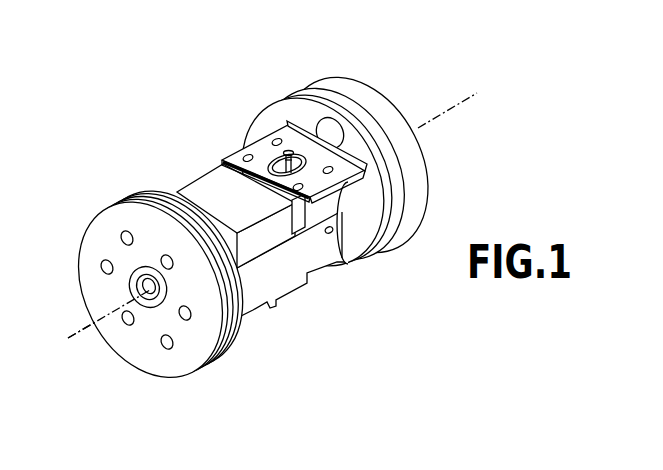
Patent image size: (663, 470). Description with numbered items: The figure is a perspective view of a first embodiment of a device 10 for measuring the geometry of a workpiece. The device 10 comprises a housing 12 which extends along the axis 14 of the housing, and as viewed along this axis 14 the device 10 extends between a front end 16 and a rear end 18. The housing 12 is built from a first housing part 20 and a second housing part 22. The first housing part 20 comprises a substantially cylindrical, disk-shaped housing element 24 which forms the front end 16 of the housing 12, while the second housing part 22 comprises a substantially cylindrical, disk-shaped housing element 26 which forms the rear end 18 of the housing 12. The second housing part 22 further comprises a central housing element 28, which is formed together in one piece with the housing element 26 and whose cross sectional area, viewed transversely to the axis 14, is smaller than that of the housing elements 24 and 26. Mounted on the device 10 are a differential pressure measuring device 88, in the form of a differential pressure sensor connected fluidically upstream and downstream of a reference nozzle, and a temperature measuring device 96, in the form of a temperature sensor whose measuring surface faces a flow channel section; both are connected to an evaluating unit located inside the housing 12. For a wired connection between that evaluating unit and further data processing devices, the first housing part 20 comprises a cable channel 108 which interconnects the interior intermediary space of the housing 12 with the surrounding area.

The device for measuring the geometry of a workpiece 10 is at (168, 77).
The housing 12 is at (142, 165).
The axis of the housing 14 is at (445, 107).
The front end 16 is at (400, 78).
The rear end 18 is at (117, 372).
The first housing part 20 is at (398, 268).
The second housing part 22 is at (209, 370).
The housing element 24 is at (352, 82).
The housing element 26 is at (210, 368).
The central housing element 28 is at (302, 305).
The differential pressure measuring device 88 is at (215, 193).
The temperature measuring device 96 is at (272, 150).
The cable channel 108 is at (288, 126).